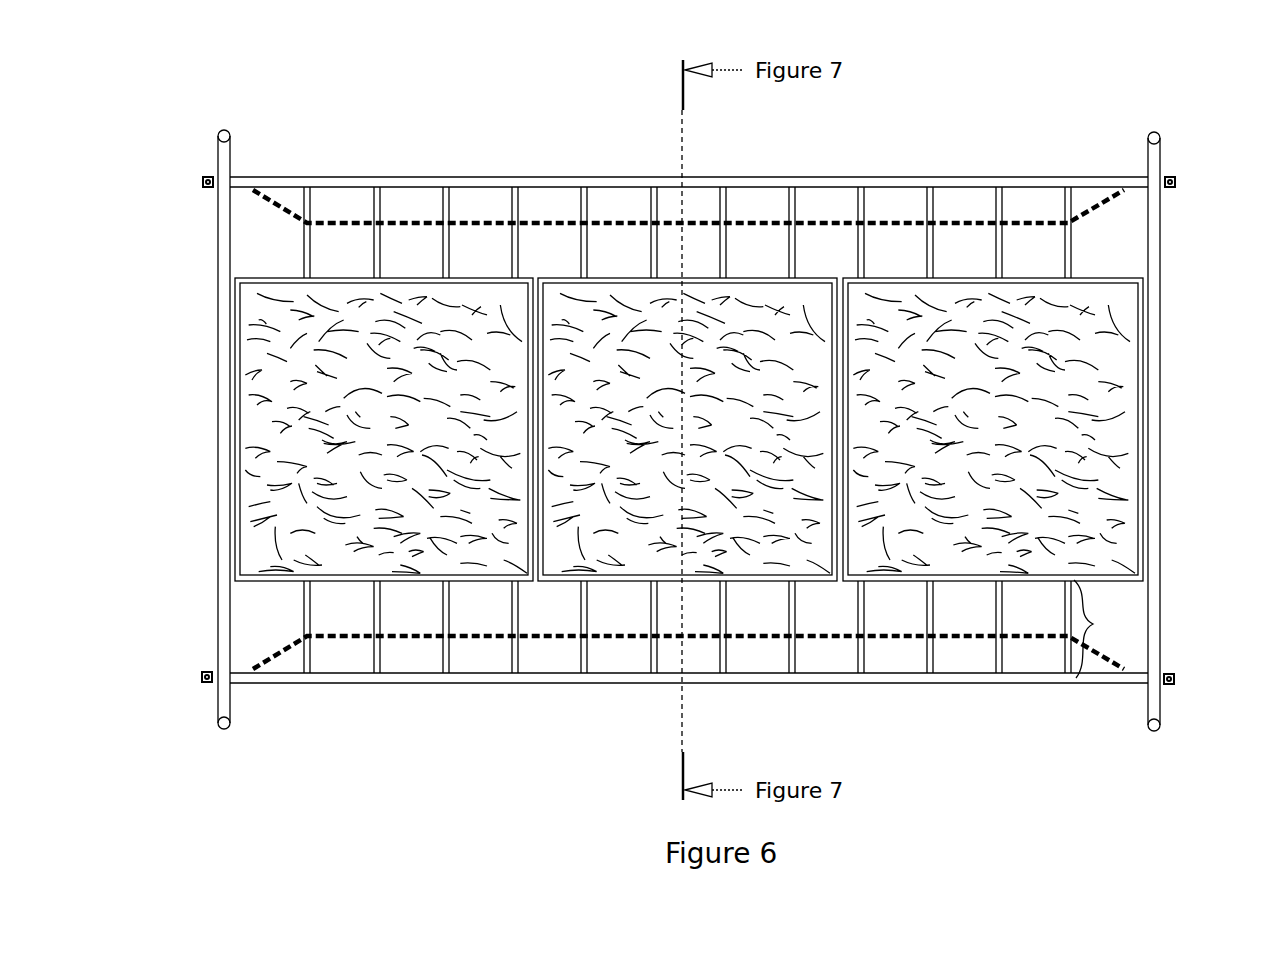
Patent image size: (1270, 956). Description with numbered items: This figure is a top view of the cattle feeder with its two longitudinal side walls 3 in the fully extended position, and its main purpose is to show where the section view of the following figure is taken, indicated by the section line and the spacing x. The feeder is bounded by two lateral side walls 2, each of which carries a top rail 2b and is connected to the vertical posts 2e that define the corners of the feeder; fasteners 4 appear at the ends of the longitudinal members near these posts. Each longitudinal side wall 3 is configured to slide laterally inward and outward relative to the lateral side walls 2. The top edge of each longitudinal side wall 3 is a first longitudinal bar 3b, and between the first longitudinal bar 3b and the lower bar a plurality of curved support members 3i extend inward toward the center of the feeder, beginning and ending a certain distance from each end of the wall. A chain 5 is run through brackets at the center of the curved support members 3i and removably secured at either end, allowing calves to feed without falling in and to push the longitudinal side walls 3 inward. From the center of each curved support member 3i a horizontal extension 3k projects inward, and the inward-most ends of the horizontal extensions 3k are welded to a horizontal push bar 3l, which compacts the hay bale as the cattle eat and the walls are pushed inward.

The lateral side wall 2 is at (695, 438).
The top rail 2b is at (220, 342).
The vertical post 2e is at (229, 131).
The fastening eye 4 is at (203, 179).
The chain 5 is at (282, 202).
The longitudinal side wall 3 is at (689, 423).
The first longitudinal bar 3b is at (928, 183).
The curved support member 3i is at (861, 198).
The horizontal extension 3k is at (584, 262).
The horizontal push bar 3l is at (636, 274).
The spacing dimension x is at (1091, 629).